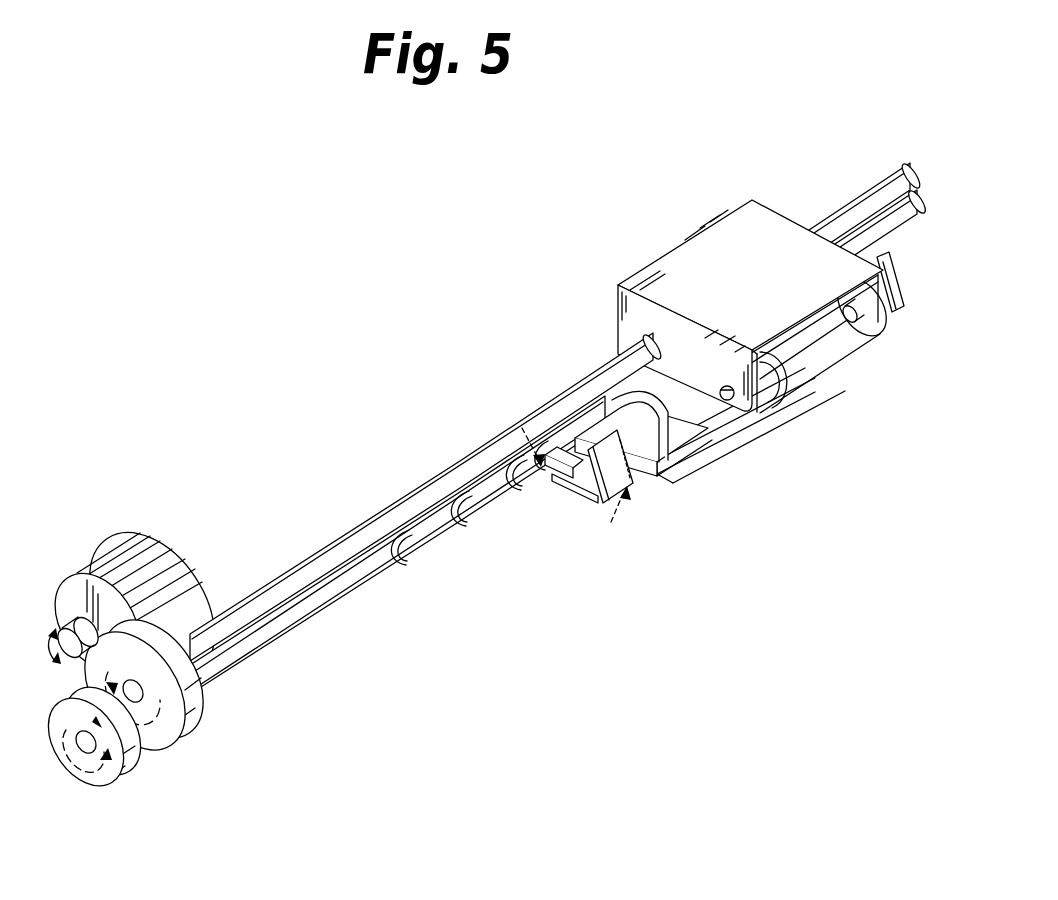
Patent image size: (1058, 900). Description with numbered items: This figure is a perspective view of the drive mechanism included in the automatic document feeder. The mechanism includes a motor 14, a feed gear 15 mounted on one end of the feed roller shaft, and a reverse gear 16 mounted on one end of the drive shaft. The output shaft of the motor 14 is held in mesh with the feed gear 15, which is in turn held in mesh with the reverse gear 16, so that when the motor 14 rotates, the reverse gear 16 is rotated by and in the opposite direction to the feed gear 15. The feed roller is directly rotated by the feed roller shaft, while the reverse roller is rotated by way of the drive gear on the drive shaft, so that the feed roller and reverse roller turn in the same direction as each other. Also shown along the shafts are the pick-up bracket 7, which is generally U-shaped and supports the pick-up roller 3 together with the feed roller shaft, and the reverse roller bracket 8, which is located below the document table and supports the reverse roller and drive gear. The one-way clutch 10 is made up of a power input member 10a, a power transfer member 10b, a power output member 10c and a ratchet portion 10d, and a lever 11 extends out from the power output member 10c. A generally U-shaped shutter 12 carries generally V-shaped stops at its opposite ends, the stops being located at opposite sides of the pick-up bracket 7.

The pick-up roller 3 is at (821, 368).
The pick-up bracket 7 is at (663, 268).
The reverse roller bracket 8 is at (488, 513).
The one-way clutch 10 is at (607, 594).
The power input member 10a is at (402, 558).
The power transfer member 10b is at (488, 512).
The power output member 10c is at (533, 468).
The ratchet portion 10d is at (457, 522).
The lever 11 is at (567, 483).
The shutter 12 is at (715, 440).
The motor 14 is at (118, 560).
The feed gear 15 is at (172, 733).
The reverse gear 16 is at (105, 778).